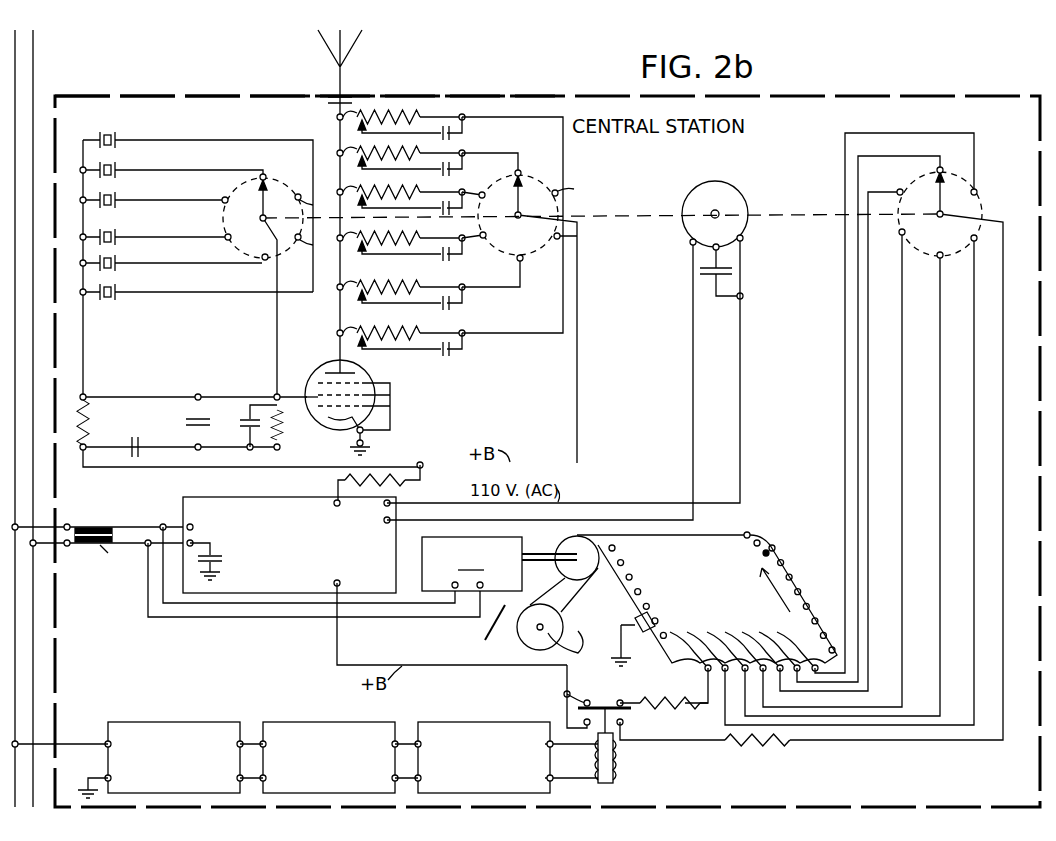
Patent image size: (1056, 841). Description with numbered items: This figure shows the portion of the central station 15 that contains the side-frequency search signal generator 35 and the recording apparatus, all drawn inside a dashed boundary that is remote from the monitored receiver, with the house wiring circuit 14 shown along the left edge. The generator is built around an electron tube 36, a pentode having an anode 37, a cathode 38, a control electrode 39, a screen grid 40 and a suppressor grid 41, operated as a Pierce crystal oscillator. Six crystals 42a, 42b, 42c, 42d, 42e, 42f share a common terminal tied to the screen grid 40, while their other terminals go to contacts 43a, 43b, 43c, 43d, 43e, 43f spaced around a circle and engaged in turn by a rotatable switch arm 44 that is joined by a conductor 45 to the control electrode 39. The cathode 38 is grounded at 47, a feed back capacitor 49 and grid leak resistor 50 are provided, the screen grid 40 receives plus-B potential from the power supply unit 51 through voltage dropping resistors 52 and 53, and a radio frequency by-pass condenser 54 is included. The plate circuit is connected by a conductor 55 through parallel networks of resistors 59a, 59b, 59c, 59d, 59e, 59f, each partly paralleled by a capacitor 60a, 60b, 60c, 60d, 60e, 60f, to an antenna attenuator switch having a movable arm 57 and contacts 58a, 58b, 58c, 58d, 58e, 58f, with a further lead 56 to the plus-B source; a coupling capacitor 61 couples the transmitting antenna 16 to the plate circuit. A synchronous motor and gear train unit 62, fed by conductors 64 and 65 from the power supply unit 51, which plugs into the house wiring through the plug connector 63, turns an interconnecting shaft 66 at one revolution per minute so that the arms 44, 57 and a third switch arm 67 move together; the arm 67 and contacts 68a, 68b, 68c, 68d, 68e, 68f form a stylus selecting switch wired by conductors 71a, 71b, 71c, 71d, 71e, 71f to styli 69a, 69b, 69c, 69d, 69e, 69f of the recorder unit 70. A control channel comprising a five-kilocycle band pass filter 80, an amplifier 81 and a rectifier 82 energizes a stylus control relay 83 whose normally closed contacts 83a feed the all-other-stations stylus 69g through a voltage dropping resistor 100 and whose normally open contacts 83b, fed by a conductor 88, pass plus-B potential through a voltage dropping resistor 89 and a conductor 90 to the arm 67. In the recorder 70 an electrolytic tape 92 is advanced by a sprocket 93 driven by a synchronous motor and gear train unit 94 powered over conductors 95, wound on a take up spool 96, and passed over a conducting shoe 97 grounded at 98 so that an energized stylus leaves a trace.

The house wiring circuit 14 is at (20, 78).
The central station 15 is at (537, 96).
The transmitting antenna 16 is at (346, 62).
The search signal generator 35 is at (231, 96).
The electron tube 36 is at (362, 370).
The anode 37 is at (312, 380).
The cathode 38 is at (368, 452).
The control electrode 39 is at (385, 426).
The screen grid 40 is at (392, 400).
The suppressor grid 41 is at (365, 387).
The crystal 42a is at (115, 138).
The crystal 42b is at (115, 168).
The crystal 42c is at (115, 198).
The crystal 42d is at (115, 235).
The crystal 42e is at (115, 261).
The crystal 42f is at (115, 290).
The contact 43a is at (295, 183).
The contact 43b is at (260, 174).
The contact 43c is at (224, 198).
The contact 43d is at (227, 234).
The contact 43e is at (262, 257).
The contact 43f is at (295, 256).
The rotatable switch arm 44 is at (252, 216).
The conductor 45 is at (280, 322).
The ground 47 is at (354, 459).
The feed back capacitor 49 is at (252, 418).
The grid leak resistor 50 is at (280, 436).
The power supply unit 51 is at (228, 496).
The voltage dropping resistor 52 is at (410, 486).
The voltage dropping resistor 53 is at (106, 385).
The radio frequency by-pass condenser 54 is at (134, 433).
The conductor 55 is at (186, 420).
The lead 56 is at (593, 382).
The movable arm 57 is at (545, 185).
The contact 58a is at (576, 186).
The contact 58b is at (534, 162).
The contact 58c is at (516, 195).
The contact 58d is at (486, 235).
The contact 58e is at (521, 261).
The contact 58f is at (582, 235).
The resistor 59a is at (386, 117).
The resistor 59b is at (388, 152).
The resistor 59c is at (388, 187).
The resistor 59d is at (388, 238).
The resistor 59e is at (388, 280).
The resistor 59f is at (385, 330).
The capacitor 60a is at (427, 130).
The capacitor 60b is at (427, 166).
The capacitor 60c is at (438, 205).
The capacitor 60d is at (427, 251).
The capacitor 60e is at (427, 301).
The capacitor 60f is at (426, 346).
The coupling capacitor 61 is at (333, 96).
The synchronous motor and gear train unit 62 is at (735, 205).
The plug connector 63 is at (95, 525).
The conductor 64 is at (696, 400).
The conductor 65 is at (743, 400).
The interconnecting shaft 66 is at (658, 212).
The switch arm 67 is at (930, 198).
The contact 68a is at (977, 190).
The contact 68b is at (944, 170).
The contact 68c is at (900, 188).
The contact 68d is at (900, 235).
The contact 68e is at (940, 258).
The contact 68f is at (970, 237).
The stylus 69a is at (806, 634).
The stylus 69b is at (774, 639).
The stylus 69c is at (756, 628).
The stylus 69d is at (739, 639).
The stylus 69e is at (721, 628).
The stylus 69f is at (703, 639).
The all other stations stylus 69g is at (685, 628).
The recorder unit 70 is at (595, 672).
The conductor 71a is at (842, 368).
The conductor 71b is at (854, 418).
The conductor 71c is at (862, 456).
The conductor 71d is at (890, 398).
The conductor 71e is at (925, 398).
The conductor 71f is at (960, 398).
The 5 kc. band pass filter 80 is at (166, 722).
The amplifier 81 is at (306, 722).
The rectifier 82 is at (484, 722).
The stylus control relay 83 is at (612, 782).
The normally closed contacts 83a is at (596, 700).
The normally open contacts 83b is at (624, 723).
The conductor 88 is at (480, 668).
The voltage dropping resistor 89 is at (745, 750).
The conductor 90 is at (1003, 402).
The recording element 92 is at (714, 570).
The sprocket 93 is at (563, 543).
The synchronous motor and gear train unit 94 is at (437, 601).
The conductors 95 is at (294, 616).
The take up spool 96 is at (537, 652).
The conducting shoe 97 is at (635, 645).
The ground 98 is at (620, 629).
The voltage dropping resistor 100 is at (664, 701).